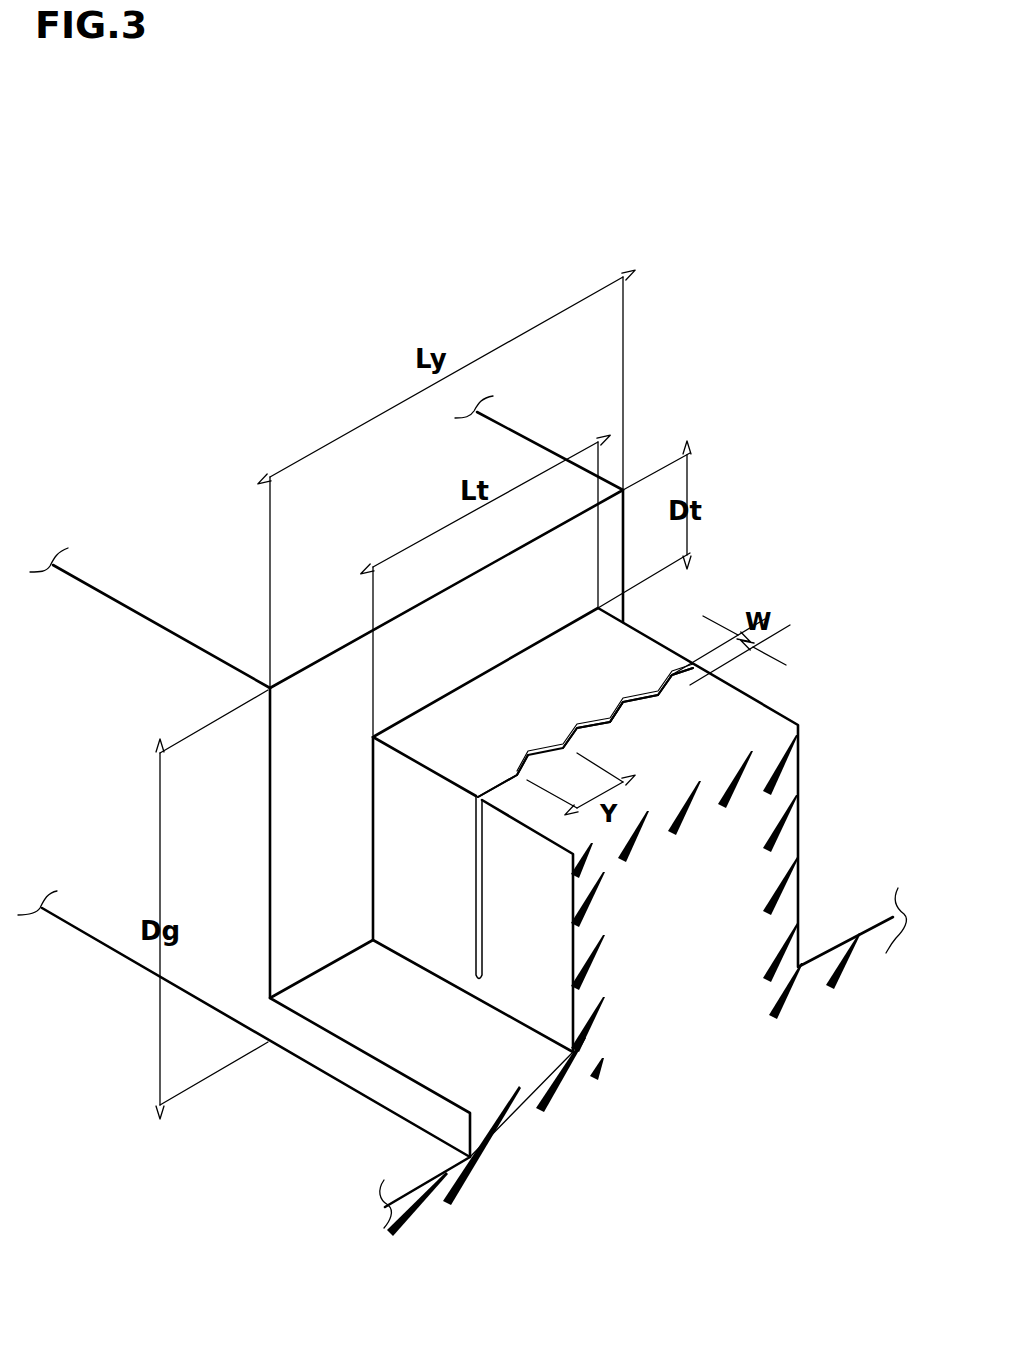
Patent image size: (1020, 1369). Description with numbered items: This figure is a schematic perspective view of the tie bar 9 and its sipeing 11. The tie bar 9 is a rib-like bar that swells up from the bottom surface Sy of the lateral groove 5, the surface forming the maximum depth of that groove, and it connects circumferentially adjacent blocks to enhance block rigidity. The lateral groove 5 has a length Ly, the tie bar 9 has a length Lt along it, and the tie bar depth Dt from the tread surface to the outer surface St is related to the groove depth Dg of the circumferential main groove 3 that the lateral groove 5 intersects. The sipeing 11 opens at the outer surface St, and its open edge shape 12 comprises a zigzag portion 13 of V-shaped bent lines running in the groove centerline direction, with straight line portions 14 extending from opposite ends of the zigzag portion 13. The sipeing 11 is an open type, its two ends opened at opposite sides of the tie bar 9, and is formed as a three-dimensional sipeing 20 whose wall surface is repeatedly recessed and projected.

The circumferential main groove 3 is at (410, 1173).
The lateral groove 5 is at (437, 1062).
The tie bar 9 is at (753, 723).
The sipeing 11 is at (675, 585).
The three-dimensional sipeing 20 is at (585, 730).
The open edge shape 12 is at (633, 700).
The zigzag portion 13 is at (597, 720).
The straight line portion 14 is at (496, 780).